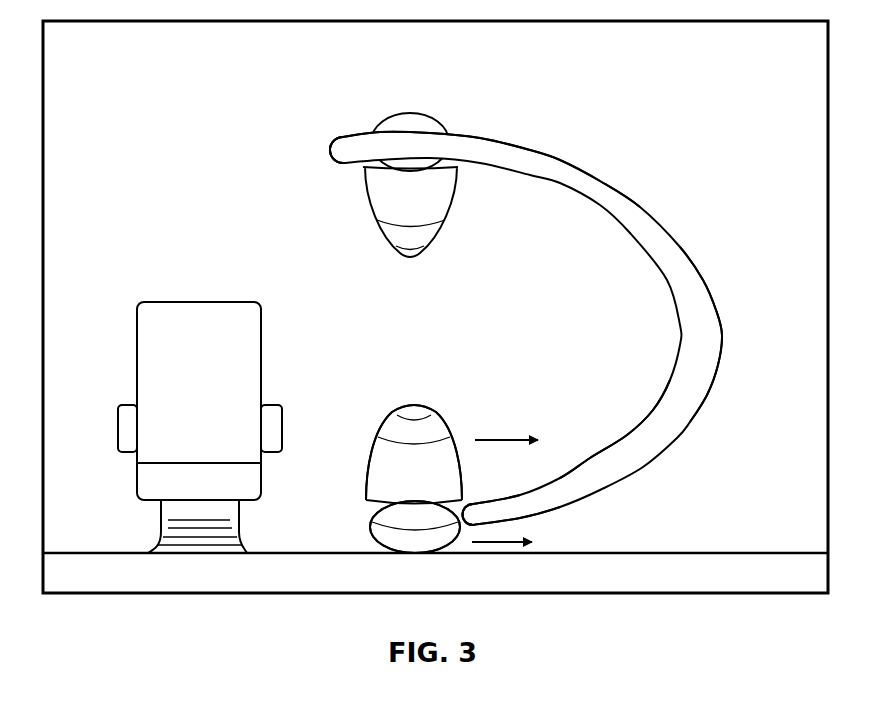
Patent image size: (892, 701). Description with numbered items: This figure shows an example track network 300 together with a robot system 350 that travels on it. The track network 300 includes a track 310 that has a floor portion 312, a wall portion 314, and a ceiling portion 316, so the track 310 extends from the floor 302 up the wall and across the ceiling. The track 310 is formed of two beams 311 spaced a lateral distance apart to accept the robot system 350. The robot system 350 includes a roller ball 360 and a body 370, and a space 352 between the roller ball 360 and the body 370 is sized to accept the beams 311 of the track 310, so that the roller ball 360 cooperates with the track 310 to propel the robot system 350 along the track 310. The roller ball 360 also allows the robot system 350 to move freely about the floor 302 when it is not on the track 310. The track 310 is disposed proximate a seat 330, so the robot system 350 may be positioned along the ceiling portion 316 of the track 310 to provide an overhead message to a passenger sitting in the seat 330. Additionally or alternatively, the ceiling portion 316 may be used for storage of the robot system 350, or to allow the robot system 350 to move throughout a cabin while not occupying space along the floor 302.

The track network 300 is at (726, 233).
The floor 302 is at (718, 553).
The track 310 is at (588, 460).
The beams 311 is at (560, 164).
The floor portion 312 is at (580, 503).
The wall portion 314 is at (723, 334).
The ceiling portion 316 is at (488, 133).
The seat 330 is at (137, 357).
The robot system 350 is at (453, 388).
The space 352 is at (337, 167).
The roller ball 360 is at (419, 113).
The body 370 is at (457, 207).